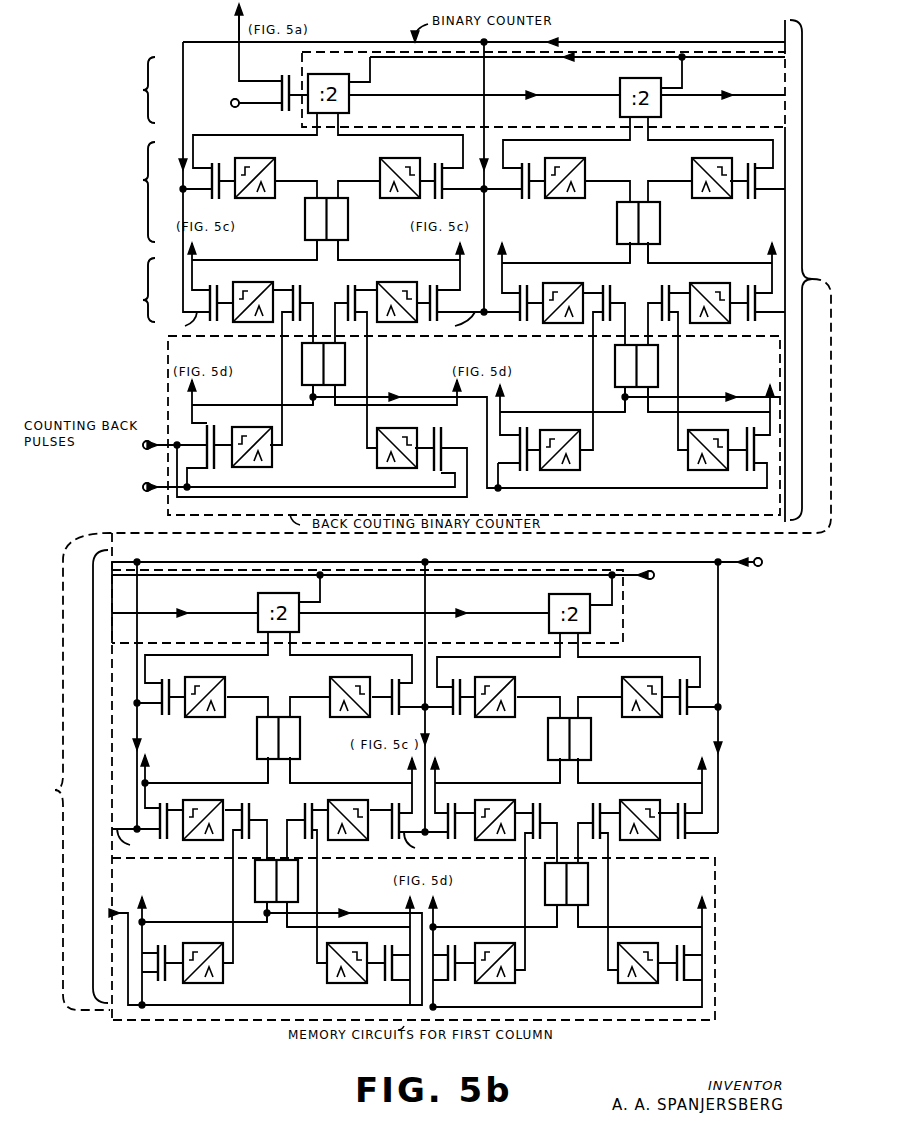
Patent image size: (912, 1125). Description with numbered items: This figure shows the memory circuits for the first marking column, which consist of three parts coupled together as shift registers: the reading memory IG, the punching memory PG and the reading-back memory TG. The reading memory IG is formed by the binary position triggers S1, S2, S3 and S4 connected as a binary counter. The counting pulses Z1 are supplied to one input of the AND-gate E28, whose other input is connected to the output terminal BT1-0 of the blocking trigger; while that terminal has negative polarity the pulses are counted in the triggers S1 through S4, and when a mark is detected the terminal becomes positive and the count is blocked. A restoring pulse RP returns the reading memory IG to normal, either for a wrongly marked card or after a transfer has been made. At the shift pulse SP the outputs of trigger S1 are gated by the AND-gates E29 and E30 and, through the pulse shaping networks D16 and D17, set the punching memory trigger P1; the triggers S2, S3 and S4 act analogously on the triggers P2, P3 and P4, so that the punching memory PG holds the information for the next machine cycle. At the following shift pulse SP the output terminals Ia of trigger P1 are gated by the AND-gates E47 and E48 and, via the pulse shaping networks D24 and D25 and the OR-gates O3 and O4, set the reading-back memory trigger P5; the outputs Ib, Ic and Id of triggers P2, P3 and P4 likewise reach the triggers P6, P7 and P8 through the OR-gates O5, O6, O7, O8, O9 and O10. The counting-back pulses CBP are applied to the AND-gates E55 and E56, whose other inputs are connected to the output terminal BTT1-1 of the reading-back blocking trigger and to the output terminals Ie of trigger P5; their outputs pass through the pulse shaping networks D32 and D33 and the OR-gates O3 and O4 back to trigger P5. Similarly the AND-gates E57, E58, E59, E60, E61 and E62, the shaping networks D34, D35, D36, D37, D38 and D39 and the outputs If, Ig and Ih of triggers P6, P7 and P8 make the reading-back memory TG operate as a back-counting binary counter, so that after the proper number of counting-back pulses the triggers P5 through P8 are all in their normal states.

The counting pulses Z1 is at (226, 28).
The output terminal of blocking trigger BT1 BT1-0 is at (212, 97).
The AND-gate E28 is at (269, 86).
The binary position trigger S1 is at (315, 76).
The binary position trigger S2 is at (625, 80).
The AND-gate E29 is at (205, 162).
The pulse shaping network D16 is at (241, 160).
The pulse shaping network D17 is at (385, 160).
The AND-gate E30 is at (434, 164).
The punching memory trigger P1 is at (305, 208).
The punching memory trigger P2 is at (617, 214).
The output terminal of trigger P1 Ia is at (368, 260).
The output terminal of trigger P2 Ib is at (678, 262).
The AND-gate E47 is at (218, 292).
The pulse shaping network D24 is at (253, 292).
The OR-gate O3 is at (301, 293).
The OR-gate O4 is at (358, 293).
The pulse shaping network D25 is at (397, 292).
The AND-gate E48 is at (444, 292).
The OR-gate O5 is at (601, 291).
The OR-gate O6 is at (659, 291).
The reading back memory trigger P5 is at (302, 352).
The reading back memory trigger P6 is at (615, 354).
The AND-gate E55 is at (198, 415).
The pulse shaping network D32 is at (238, 428).
The output terminal of trigger P5 Ie is at (352, 406).
The pulse shaping network D33 is at (381, 428).
The AND-gate E56 is at (427, 433).
The AND-gate E57 is at (512, 438).
The pulse shaping network D34 is at (577, 432).
The output terminal of trigger P6 If is at (613, 411).
The pulse shaping network D35 is at (690, 431).
The AND-gate E58 is at (740, 438).
The counting-back pulses CBP is at (121, 444).
The output terminal of reading-back blocking trigger BTT1 BTT1-1 is at (120, 488).
The binary position trigger S3 is at (261, 594).
The binary position trigger S4 is at (553, 595).
The restoring pulse RP is at (669, 591).
The shift pulse SP is at (468, 585).
The punching memory trigger P3 is at (257, 726).
The punching memory trigger P4 is at (548, 729).
The output terminal of trigger P3 Ic is at (315, 780).
The output terminal of trigger P4 Id is at (605, 780).
The OR-gate O7 is at (239, 806).
The OR-gate O8 is at (302, 806).
The OR-gate O9 is at (530, 806).
The OR-gate O10 is at (590, 806).
The reading back memory trigger P7 is at (255, 869).
The reading back memory trigger P8 is at (545, 872).
The AND-gate E59 is at (151, 953).
The pulse shaping network D36 is at (190, 946).
The output terminal of trigger P7 Ig is at (258, 928).
The pulse shaping network D37 is at (334, 946).
The AND-gate E60 is at (379, 951).
The AND-gate E61 is at (440, 953).
The pulse shaping network D38 is at (480, 946).
The output terminal of trigger P8 Ih is at (550, 928).
The pulse shaping network D39 is at (624, 946).
The AND-gate E62 is at (670, 953).
The reading memory IG is at (97, 90).
The punching memory PG is at (95, 192).
The reading-back memory TG is at (92, 290).